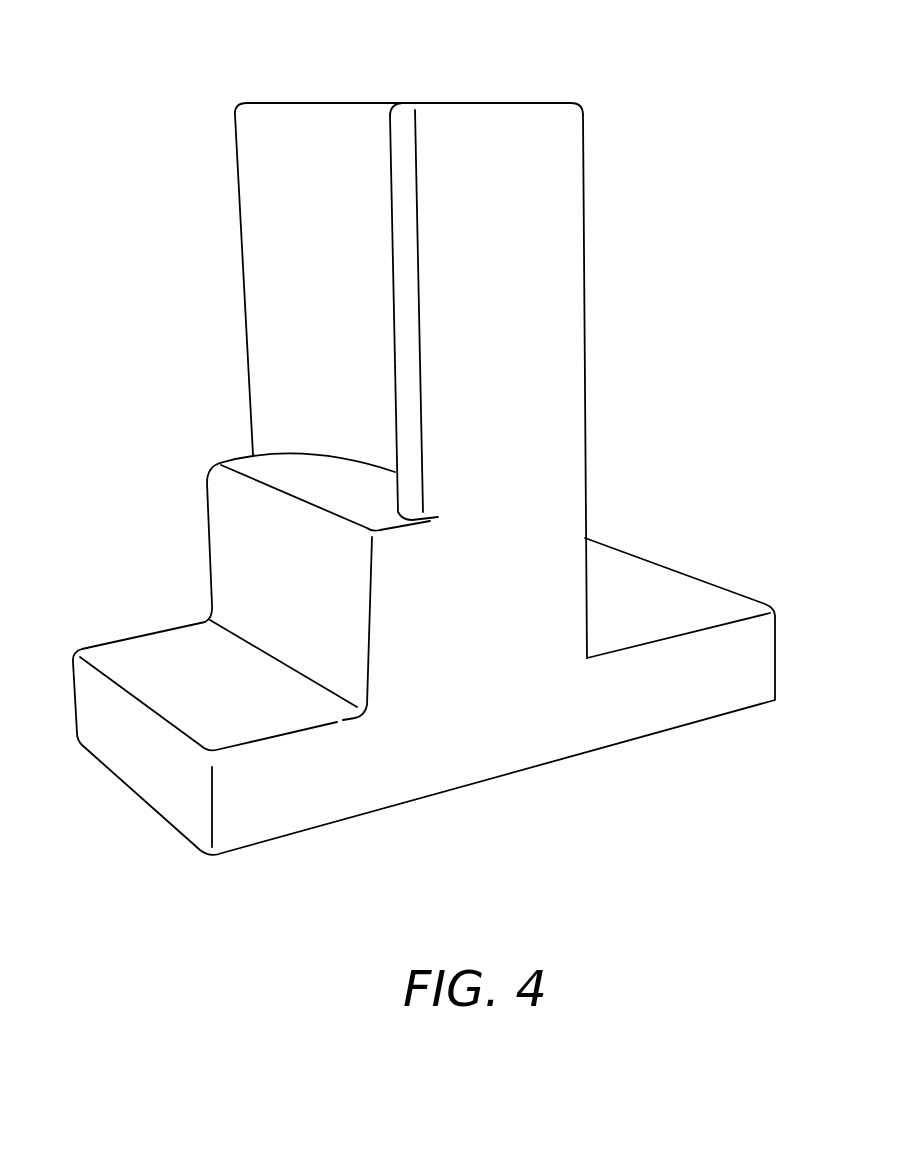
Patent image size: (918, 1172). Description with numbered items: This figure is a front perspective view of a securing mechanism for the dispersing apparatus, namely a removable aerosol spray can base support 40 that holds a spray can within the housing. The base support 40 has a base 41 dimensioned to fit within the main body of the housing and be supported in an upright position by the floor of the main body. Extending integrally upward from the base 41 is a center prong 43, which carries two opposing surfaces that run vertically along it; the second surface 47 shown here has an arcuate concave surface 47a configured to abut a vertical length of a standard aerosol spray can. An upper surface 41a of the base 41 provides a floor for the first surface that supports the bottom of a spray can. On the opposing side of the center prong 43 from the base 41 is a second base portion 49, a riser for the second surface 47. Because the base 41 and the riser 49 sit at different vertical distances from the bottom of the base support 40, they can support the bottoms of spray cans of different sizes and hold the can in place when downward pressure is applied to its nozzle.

The base support 40 is at (634, 150).
The base 41 is at (548, 723).
The upper surface 41a is at (654, 592).
The center prong 43 is at (558, 451).
The second surface 47 is at (246, 374).
The arcuate concave surface 47a is at (268, 272).
The second base portion 49 is at (228, 547).